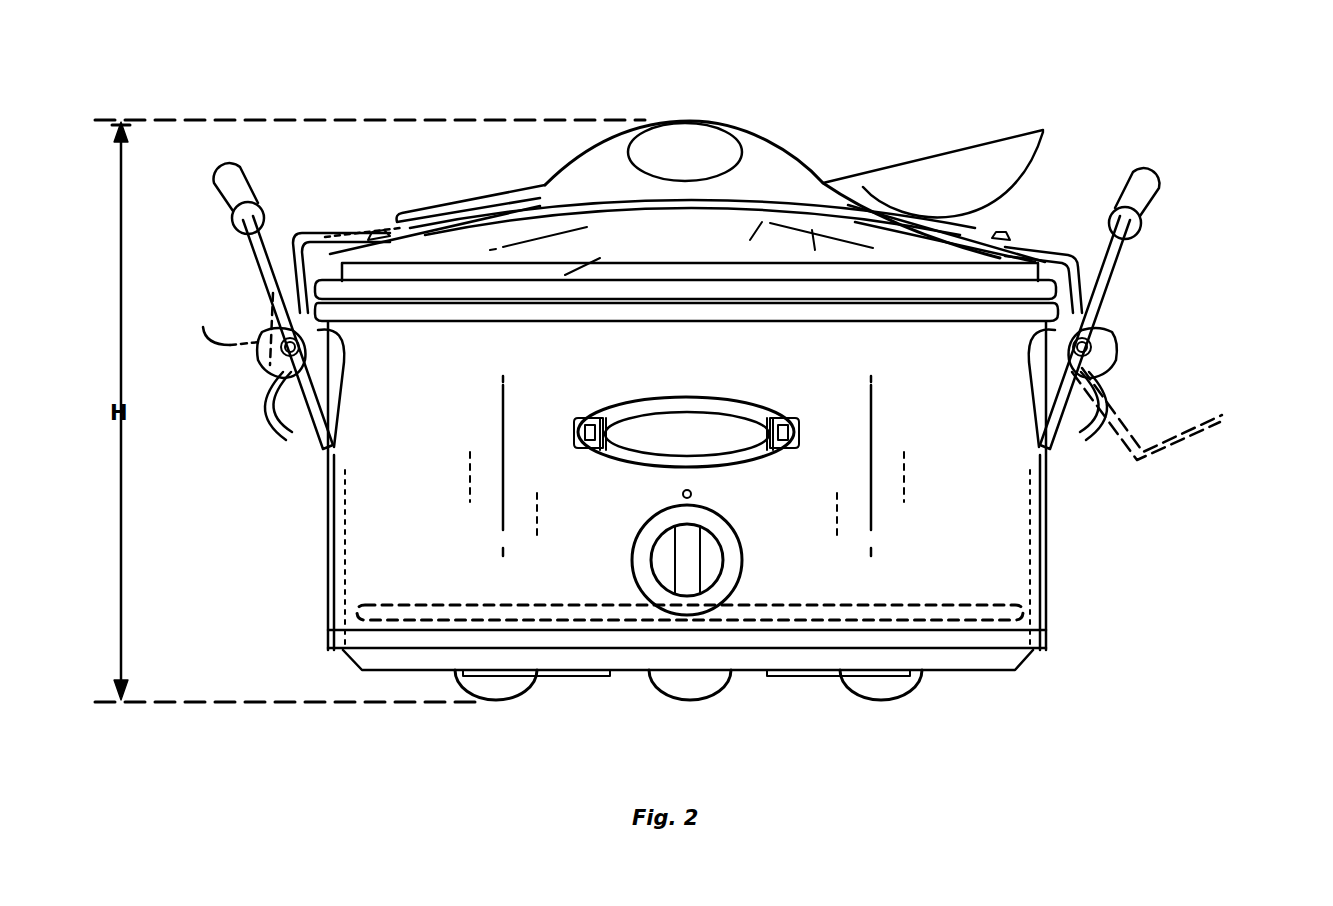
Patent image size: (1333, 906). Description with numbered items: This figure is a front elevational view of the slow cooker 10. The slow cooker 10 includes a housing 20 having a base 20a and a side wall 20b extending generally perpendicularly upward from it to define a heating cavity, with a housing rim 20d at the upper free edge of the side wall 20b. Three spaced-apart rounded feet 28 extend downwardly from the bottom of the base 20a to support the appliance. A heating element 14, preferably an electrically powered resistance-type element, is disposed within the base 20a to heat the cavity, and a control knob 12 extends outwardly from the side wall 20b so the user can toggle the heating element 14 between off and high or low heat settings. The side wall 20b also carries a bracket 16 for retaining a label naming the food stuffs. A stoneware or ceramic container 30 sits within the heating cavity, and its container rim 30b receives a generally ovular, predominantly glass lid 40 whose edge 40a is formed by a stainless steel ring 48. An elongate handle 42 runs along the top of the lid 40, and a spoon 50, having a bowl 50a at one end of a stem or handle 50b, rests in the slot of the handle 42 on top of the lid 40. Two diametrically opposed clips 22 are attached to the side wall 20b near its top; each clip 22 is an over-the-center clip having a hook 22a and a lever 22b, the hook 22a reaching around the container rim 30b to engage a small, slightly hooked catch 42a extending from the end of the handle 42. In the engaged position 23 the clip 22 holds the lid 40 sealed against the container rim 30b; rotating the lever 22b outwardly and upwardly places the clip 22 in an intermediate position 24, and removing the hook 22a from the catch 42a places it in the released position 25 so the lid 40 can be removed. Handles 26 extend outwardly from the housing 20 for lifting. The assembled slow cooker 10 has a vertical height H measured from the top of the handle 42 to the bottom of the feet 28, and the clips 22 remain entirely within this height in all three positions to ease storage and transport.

The slow cooker 10 is at (1157, 120).
The control knob 12 is at (722, 580).
The heating element 14 is at (1045, 617).
The bracket 16 is at (623, 458).
The housing 20 is at (1050, 525).
The base 20a is at (1005, 657).
The side wall 20b is at (997, 572).
The housing rim 20d is at (1033, 313).
The clip 22 is at (266, 378).
The hook 22a is at (322, 238).
The lever 22b is at (283, 395).
The engaged position 23 is at (298, 240).
The intermediate position 24 is at (268, 302).
The released position 25 is at (1228, 414).
The handles 26 is at (230, 192).
The feet 28 is at (497, 699).
The container 30 is at (1000, 290).
The container rim 30b is at (416, 287).
The lid 40 is at (510, 228).
The edge 40a is at (835, 268).
The handle 42 is at (700, 138).
The catch 42a is at (376, 232).
The ring 48 is at (577, 273).
The spoon 50 is at (1024, 135).
The bowl 50a is at (952, 178).
The handle 50b is at (457, 200).